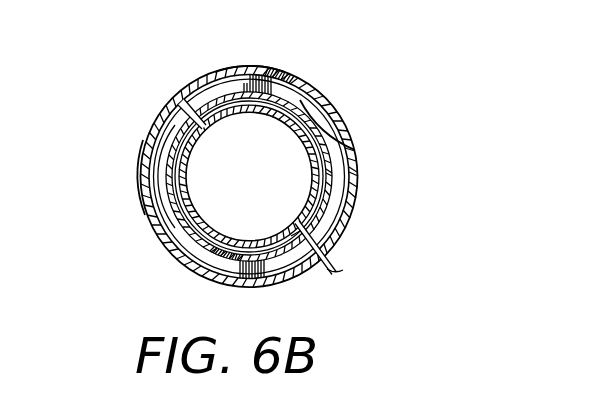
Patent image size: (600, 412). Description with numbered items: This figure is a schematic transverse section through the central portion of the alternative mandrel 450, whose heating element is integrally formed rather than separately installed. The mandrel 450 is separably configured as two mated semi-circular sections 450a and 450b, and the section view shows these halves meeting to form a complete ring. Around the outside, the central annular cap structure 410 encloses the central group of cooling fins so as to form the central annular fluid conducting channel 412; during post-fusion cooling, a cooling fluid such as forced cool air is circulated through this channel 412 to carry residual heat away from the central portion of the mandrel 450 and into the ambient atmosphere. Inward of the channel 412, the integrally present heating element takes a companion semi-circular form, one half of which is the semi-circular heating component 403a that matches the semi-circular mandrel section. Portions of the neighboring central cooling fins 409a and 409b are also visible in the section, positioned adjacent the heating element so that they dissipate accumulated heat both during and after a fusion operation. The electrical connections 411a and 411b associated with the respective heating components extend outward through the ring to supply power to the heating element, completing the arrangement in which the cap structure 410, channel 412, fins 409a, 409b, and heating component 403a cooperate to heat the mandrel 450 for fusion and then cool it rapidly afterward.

The mandrel 450 is at (152, 89).
The semi-circular section 450a is at (299, 69).
The semi-circular section 450b is at (136, 149).
The central annular cap structure 410 is at (239, 66).
The central annular fluid conducting channel 412 is at (318, 110).
The semi-circular heating component 403a is at (316, 137).
The central cooling fin 409a is at (353, 180).
The central cooling fin 409b is at (148, 200).
The electrical connection 411a is at (348, 266).
The electrical connection 411b is at (328, 276).